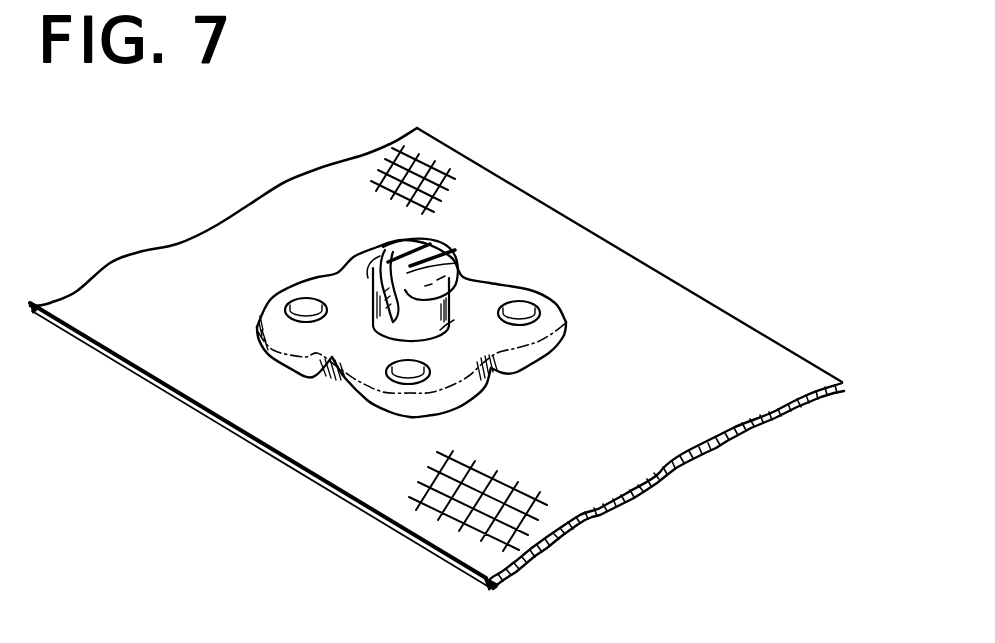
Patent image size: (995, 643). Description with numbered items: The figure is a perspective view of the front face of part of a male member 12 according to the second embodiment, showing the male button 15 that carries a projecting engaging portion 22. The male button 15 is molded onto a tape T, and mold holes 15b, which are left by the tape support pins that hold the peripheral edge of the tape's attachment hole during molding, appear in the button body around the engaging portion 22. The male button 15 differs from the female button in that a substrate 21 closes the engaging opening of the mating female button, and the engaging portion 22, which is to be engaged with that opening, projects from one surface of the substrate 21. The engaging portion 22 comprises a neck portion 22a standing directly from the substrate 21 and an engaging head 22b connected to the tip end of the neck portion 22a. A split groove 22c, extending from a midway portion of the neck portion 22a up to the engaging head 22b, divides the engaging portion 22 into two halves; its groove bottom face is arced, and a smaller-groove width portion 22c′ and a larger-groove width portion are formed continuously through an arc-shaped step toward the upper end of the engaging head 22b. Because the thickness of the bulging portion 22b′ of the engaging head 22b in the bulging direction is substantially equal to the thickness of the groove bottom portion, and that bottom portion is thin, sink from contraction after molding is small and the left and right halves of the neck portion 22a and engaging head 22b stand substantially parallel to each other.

The male member 12 is at (752, 316).
The male button 15 is at (586, 333).
The mold holes 15b is at (537, 313).
The substrate 21 is at (328, 372).
The engaging portion 22 is at (412, 340).
The neck portion 22a is at (455, 318).
The engaging head 22b is at (470, 253).
The bulging portion 22b′ is at (456, 293).
The split groove 22c is at (432, 252).
The smaller-groove width portion 22c′ is at (435, 330).
The tape T is at (617, 450).